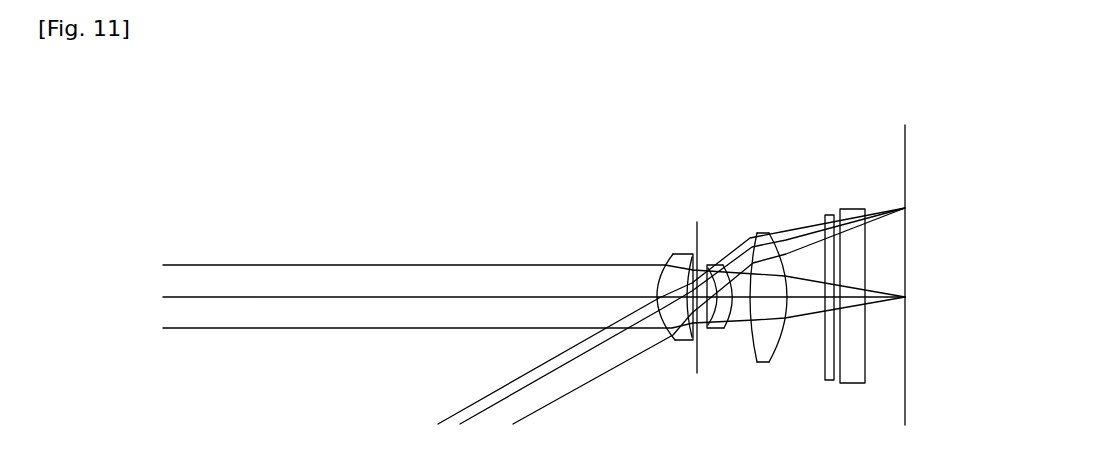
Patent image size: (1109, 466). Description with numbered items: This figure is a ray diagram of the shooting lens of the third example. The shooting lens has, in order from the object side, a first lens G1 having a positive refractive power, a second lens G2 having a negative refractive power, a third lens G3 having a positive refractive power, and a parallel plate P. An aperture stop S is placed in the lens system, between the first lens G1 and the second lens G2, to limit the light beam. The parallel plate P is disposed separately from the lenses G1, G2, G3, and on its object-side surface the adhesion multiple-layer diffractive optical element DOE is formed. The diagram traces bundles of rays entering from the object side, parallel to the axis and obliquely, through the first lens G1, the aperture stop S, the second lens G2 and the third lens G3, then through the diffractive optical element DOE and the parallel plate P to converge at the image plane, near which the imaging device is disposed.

The first lens G1 is at (670, 254).
The aperture stop S is at (697, 222).
The second lens G2 is at (716, 265).
The third lens G3 is at (763, 233).
The parallel plate P is at (852, 208).
The adhesion multiple-layer diffractive optical element DOE is at (820, 387).